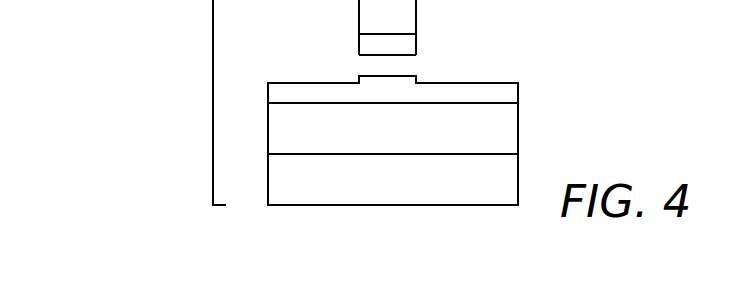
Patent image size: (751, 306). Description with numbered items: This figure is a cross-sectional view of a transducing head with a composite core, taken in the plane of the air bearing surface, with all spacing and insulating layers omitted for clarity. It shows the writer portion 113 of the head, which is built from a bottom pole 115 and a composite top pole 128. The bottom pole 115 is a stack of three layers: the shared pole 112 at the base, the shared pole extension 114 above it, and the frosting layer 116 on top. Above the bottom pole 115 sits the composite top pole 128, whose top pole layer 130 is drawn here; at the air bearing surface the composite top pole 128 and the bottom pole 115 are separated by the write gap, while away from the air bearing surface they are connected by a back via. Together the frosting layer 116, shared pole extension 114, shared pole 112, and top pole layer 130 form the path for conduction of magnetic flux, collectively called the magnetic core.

The writer portion 113 is at (213, 68).
The bottom pole 115 is at (533, 75).
The frosting layer 116 is at (312, 93).
The shared pole extension 114 is at (405, 143).
The shared pole 112 is at (418, 193).
The composite top pole 128 is at (437, 53).
The top pole layer 130 is at (303, 0).